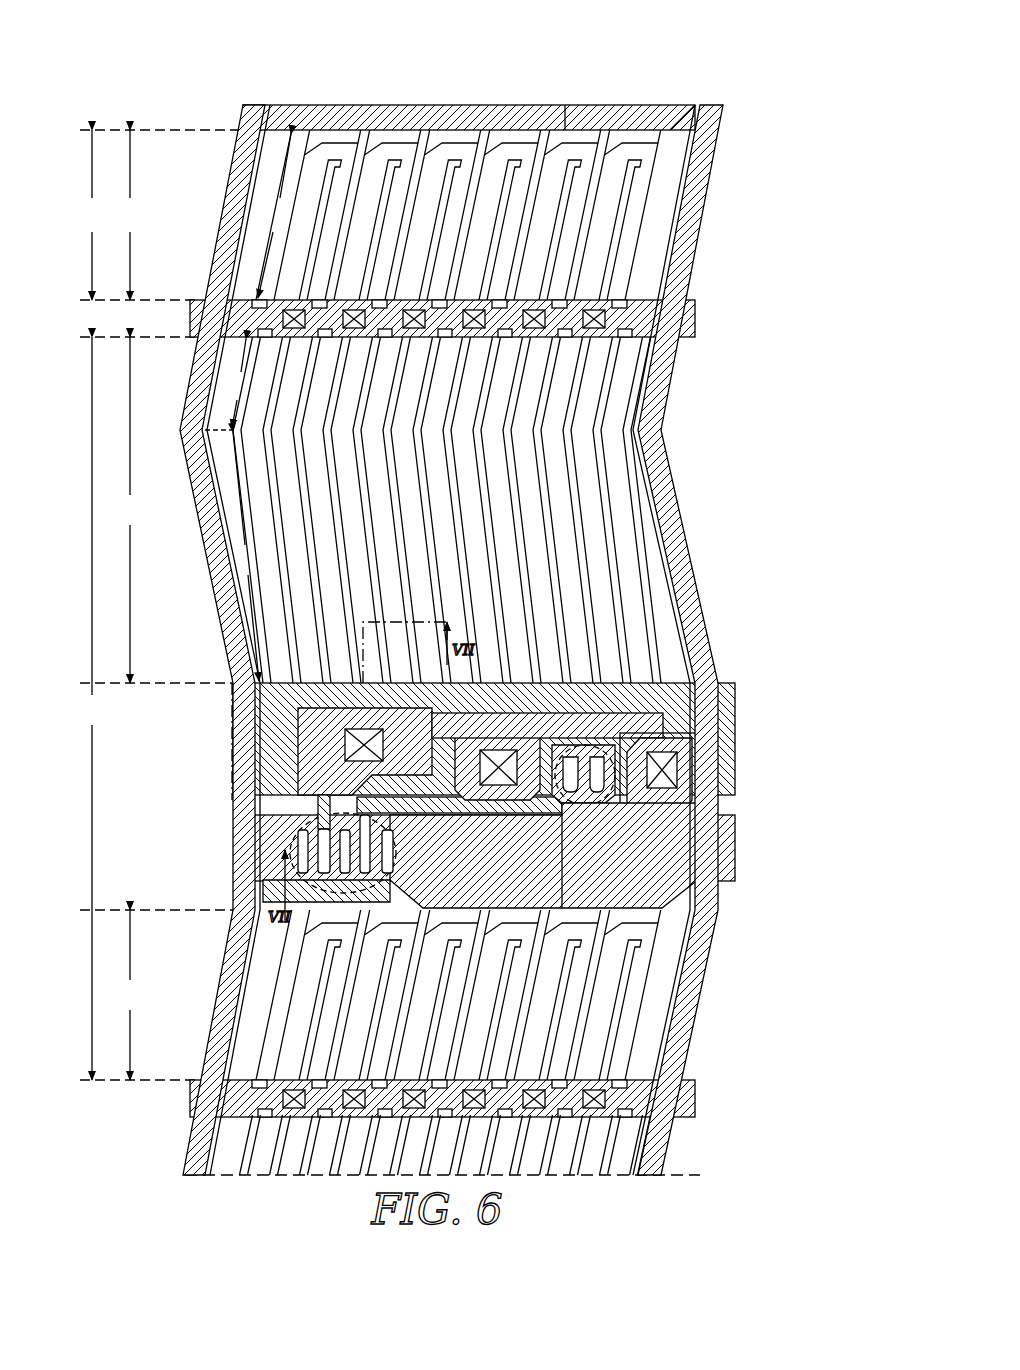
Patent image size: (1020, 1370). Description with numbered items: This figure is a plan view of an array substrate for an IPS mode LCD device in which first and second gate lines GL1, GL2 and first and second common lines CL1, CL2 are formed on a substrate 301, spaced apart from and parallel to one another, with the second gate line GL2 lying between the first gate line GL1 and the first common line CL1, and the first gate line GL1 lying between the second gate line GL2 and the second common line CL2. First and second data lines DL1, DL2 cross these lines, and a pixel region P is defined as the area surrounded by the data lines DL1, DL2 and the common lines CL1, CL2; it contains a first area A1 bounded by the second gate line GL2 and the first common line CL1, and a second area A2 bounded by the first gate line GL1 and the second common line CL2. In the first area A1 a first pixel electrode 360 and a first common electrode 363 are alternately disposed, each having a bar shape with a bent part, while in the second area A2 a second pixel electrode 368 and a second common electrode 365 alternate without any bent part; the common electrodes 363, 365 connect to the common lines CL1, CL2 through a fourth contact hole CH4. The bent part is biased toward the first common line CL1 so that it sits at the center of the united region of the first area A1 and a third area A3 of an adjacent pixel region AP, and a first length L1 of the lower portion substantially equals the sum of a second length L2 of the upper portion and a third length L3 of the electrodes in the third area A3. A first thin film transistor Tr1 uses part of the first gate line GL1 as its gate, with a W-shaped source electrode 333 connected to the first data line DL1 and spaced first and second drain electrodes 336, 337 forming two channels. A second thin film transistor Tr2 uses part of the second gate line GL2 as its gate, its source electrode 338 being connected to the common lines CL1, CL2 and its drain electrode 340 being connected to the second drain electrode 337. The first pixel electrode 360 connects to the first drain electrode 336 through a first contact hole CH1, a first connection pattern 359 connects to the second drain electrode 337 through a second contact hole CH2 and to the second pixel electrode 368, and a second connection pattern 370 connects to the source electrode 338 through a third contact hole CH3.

The substrate 301 is at (661, 85).
The second common electrode 365 is at (652, 222).
The second pixel electrode 368 is at (662, 252).
The first common line CL1 is at (665, 328).
The second common line CL2 is at (665, 1110).
The fourth contact hole CH4 is at (606, 320).
The first common electrode 363 is at (577, 452).
The first pixel electrode 360 is at (618, 508).
The second gate line GL2 is at (732, 762).
The first gate line GL1 is at (732, 868).
The drain electrode of the second TFT 340 is at (584, 748).
The first connection pattern 359 is at (540, 700).
The second connection pattern 370 is at (702, 795).
The second thin film transistor Tr2 is at (690, 805).
The first thin film transistor Tr1 is at (300, 840).
The first contact hole CH1 is at (366, 742).
The second contact hole CH2 is at (498, 760).
The third contact hole CH3 is at (662, 753).
The source electrode of the second TFT 338 is at (695, 830).
The first drain electrode 336 is at (318, 812).
The second drain electrode 337 is at (378, 835).
The source electrode of the first TFT 333 is at (380, 858).
The first data line DL1 is at (202, 522).
The second data line DL2 is at (672, 530).
The adjacent pixel region AP is at (92, 215).
The pixel region P is at (92, 708).
The third area A3 is at (130, 215).
The first area A1 is at (130, 510).
The second area A2 is at (130, 995).
The first length L1 is at (246, 556).
The second length L2 is at (225, 384).
The third length L3 is at (274, 216).